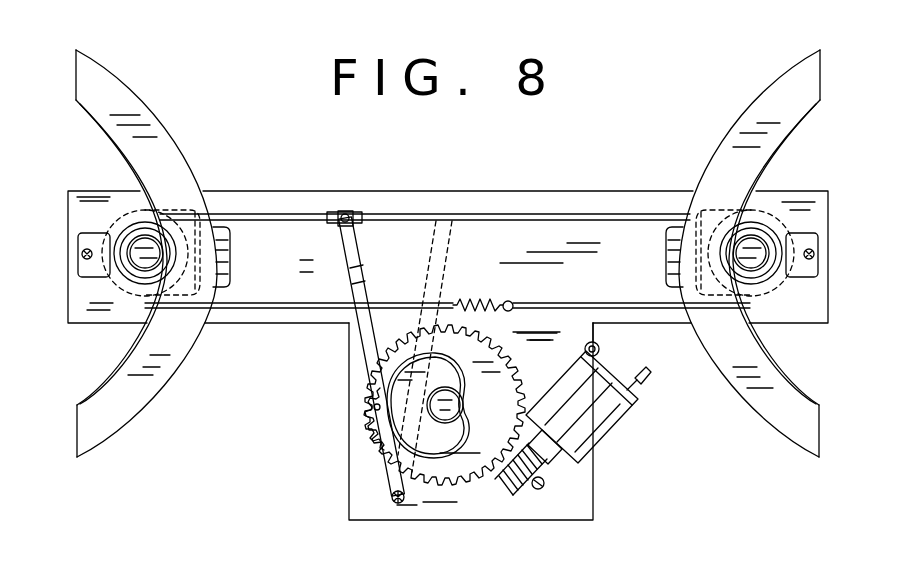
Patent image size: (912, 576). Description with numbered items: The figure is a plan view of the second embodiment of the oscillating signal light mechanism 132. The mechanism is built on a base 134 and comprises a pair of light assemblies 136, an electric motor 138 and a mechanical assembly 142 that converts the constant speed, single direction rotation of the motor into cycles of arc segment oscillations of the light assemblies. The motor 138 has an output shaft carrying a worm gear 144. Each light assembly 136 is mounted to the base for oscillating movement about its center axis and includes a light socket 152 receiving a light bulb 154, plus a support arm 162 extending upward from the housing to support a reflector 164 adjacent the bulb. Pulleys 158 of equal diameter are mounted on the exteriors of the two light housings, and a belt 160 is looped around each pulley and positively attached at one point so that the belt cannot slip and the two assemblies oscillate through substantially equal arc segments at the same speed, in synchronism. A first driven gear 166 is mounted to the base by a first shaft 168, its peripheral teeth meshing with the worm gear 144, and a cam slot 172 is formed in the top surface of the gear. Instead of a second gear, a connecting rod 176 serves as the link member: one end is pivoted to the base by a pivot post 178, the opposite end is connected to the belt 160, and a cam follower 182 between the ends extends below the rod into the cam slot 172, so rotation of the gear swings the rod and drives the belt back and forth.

The oscillating signal light mechanism 132 is at (545, 172).
The base 134 is at (577, 500).
The light assemblies 136 is at (166, 112).
The electric motor 138 is at (598, 415).
The mechanical assembly 142 is at (332, 401).
The worm gear 144 is at (527, 490).
The light sockets 152 is at (120, 240).
The light bulbs 154 is at (135, 263).
The pulleys 158 is at (143, 293).
The belt 160 is at (482, 214).
The support arm 162 is at (224, 250).
The reflector 164 is at (128, 401).
The first driven gear 166 is at (462, 463).
The first shaft 168 is at (438, 407).
The cam slot 172 is at (428, 455).
The connecting rod 176 is at (365, 333).
The pivot post 178 is at (397, 503).
The cam follower 182 is at (368, 427).